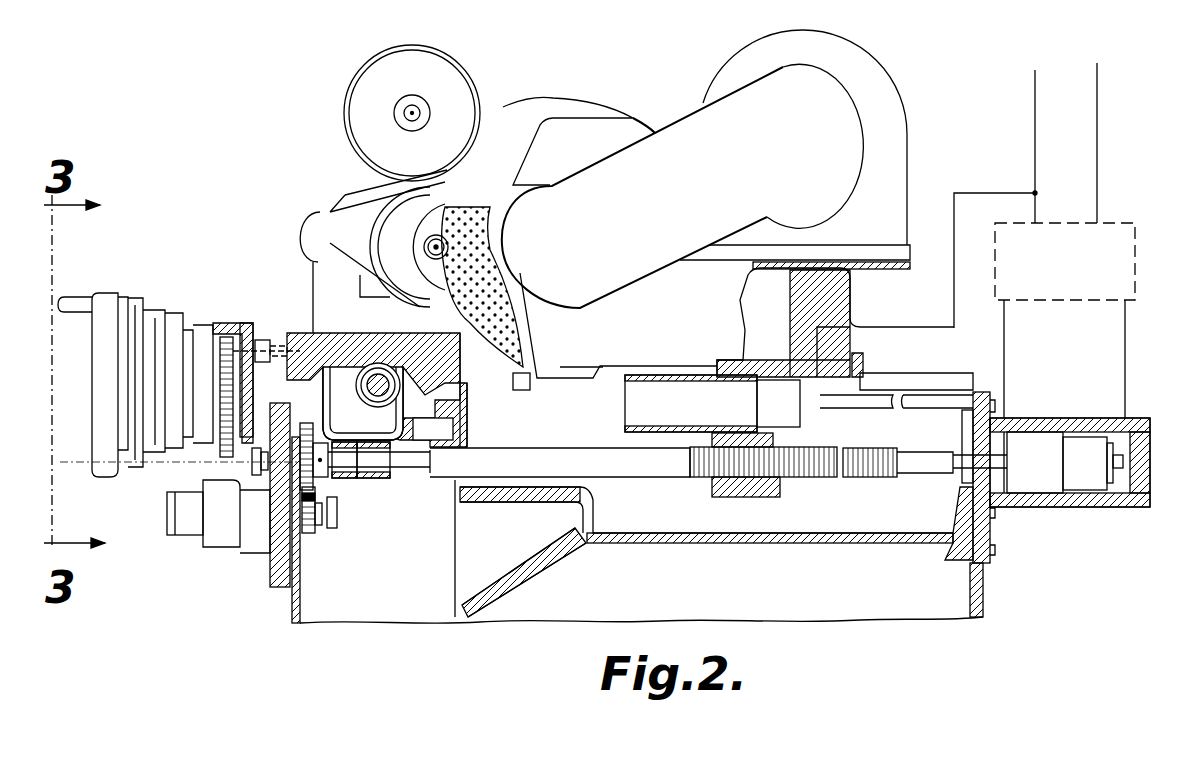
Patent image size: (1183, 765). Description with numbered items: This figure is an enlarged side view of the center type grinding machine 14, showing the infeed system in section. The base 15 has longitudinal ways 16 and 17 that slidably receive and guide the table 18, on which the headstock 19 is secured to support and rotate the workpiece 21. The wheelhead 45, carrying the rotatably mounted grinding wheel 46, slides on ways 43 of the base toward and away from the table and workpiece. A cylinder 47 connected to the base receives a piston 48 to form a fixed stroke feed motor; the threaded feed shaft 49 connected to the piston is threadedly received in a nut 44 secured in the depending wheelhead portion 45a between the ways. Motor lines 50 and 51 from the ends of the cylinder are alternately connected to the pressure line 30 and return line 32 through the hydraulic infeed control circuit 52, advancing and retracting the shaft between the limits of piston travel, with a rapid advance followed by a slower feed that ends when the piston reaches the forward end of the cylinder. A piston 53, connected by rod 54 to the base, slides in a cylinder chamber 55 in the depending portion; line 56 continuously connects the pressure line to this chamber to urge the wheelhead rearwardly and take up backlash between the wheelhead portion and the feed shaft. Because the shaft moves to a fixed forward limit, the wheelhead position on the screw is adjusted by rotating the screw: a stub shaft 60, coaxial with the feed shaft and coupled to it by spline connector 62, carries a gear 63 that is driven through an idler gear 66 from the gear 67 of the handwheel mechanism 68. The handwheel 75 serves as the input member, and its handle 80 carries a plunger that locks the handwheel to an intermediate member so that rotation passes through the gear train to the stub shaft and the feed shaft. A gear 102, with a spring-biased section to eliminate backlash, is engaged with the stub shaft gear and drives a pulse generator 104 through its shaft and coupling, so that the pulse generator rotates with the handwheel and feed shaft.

The center type grinding machine 14 is at (985, 598).
The base 15 is at (297, 627).
The longitudinal way 16 is at (440, 383).
The longitudinal way 17 is at (327, 362).
The table 18 is at (305, 331).
The headstock 19 is at (296, 232).
The workpiece 21 is at (425, 246).
The pressure line 30 is at (1035, 125).
The return line 32 is at (1097, 138).
The ways 43 is at (893, 372).
The nut 44 is at (716, 479).
The wheelhead 45 is at (903, 270).
The depending wheelhead portion 45a is at (738, 490).
The grinding wheel 46 is at (612, 217).
The cylinder 47 is at (1120, 508).
The piston 48 is at (1065, 462).
The threaded feed shaft 49 is at (850, 478).
The motor line 50 is at (1004, 323).
The motor line 51 is at (1125, 333).
The hydraulic infeed control circuit 52 is at (1130, 296).
The piston 53 is at (778, 403).
The rod 54 is at (945, 409).
The cylinder chamber 55 is at (700, 426).
The line 56 is at (953, 232).
The stub shaft 60 is at (358, 480).
The spline connector 62 is at (407, 480).
The gear 63 is at (307, 424).
The idler gear 66 is at (225, 450).
The gear 67 is at (226, 338).
The handwheel mechanism 68 is at (108, 289).
The handwheel 75 is at (106, 478).
The handle 80 is at (69, 313).
The gear 102 is at (306, 534).
The pulse generator 104 is at (180, 536).